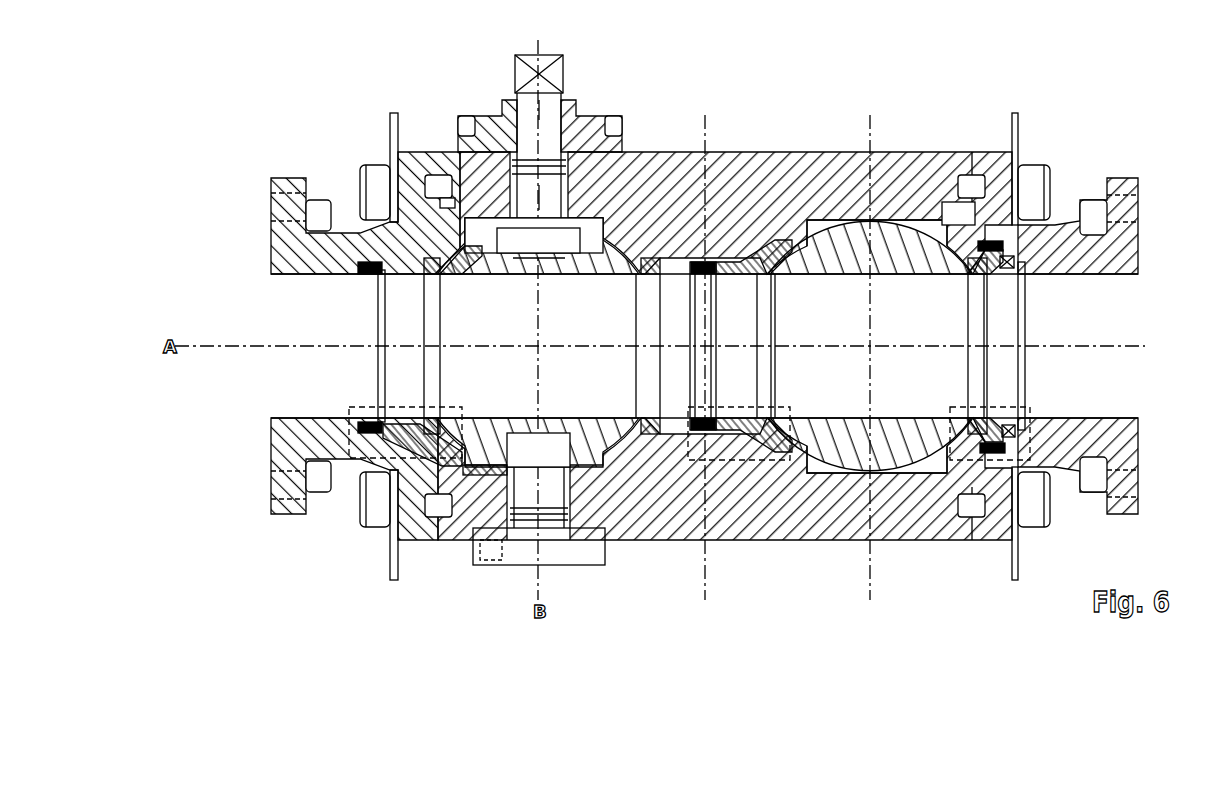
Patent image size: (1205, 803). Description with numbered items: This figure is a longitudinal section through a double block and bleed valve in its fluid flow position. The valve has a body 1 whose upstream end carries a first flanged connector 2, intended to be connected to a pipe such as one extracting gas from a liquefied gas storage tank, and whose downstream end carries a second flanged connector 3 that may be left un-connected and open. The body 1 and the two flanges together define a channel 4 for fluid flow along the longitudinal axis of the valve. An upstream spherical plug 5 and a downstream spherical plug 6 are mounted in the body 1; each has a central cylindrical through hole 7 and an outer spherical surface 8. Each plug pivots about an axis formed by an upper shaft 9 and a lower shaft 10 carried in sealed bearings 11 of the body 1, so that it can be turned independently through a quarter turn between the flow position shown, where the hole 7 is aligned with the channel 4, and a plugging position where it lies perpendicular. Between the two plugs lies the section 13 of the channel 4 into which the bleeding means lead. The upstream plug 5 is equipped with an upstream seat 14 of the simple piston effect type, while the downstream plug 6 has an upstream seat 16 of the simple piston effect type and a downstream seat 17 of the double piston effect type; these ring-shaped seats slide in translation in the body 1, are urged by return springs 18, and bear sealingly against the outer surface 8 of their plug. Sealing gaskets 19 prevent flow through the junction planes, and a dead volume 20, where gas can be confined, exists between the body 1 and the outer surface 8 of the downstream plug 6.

The body 1 is at (902, 165).
The first flanged connector 2 is at (272, 240).
The second flanged connector 3 is at (1132, 245).
The channel 4 is at (293, 318).
The upstream spherical plug 5 is at (603, 440).
The downstream spherical plug 6 is at (792, 344).
The central cylindrical through hole 7 is at (460, 316).
The outer spherical surface 8 is at (655, 430).
The upper shaft 9 is at (565, 105).
The lower shaft 10 is at (545, 495).
The sealed bearings 11 is at (456, 104).
The section of the fluid flow channel 13 is at (698, 258).
The upstream seat 14 is at (392, 420).
The upstream seat 16 is at (793, 250).
The downstream seat 17 is at (968, 478).
The return springs 18 is at (372, 262).
The sealing gaskets 19 is at (458, 195).
The dead volume 20 is at (612, 240).